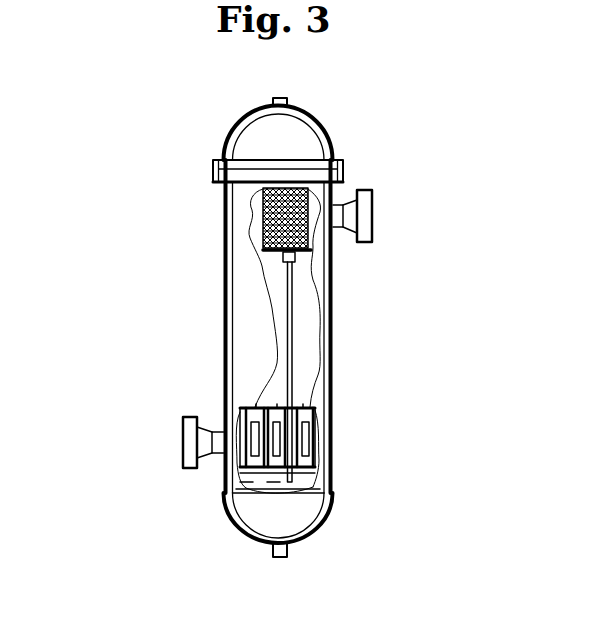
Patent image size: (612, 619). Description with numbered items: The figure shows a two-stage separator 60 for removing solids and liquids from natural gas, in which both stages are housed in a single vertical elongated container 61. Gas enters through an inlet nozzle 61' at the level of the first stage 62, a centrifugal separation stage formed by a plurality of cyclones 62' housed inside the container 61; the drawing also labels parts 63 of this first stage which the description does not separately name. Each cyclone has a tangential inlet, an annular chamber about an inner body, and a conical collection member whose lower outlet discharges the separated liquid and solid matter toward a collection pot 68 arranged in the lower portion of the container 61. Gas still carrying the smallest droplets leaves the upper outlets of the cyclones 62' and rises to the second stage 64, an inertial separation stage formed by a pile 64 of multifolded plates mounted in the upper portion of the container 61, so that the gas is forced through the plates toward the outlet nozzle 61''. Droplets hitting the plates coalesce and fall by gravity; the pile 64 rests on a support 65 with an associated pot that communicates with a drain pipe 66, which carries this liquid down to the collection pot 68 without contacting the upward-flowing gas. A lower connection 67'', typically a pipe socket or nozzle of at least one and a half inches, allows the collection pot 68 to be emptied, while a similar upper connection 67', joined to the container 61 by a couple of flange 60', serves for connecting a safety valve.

The two-stage separator 60 is at (267, 330).
The flange 60' is at (319, 155).
The vertical elongated container 61 is at (237, 324).
The inlet nozzle 61' is at (167, 454).
The outlet nozzle 61'' is at (397, 204).
The first stage 62 is at (337, 416).
The cyclones 62' is at (327, 384).
The heating elements 63 is at (314, 458).
The pile of multifolded plates 64 is at (250, 219).
The support 65 is at (288, 255).
The drain pipe 66 is at (288, 285).
The upper connection 67' is at (324, 80).
The lower connection 67'' is at (328, 574).
The collection pot 68 is at (313, 490).